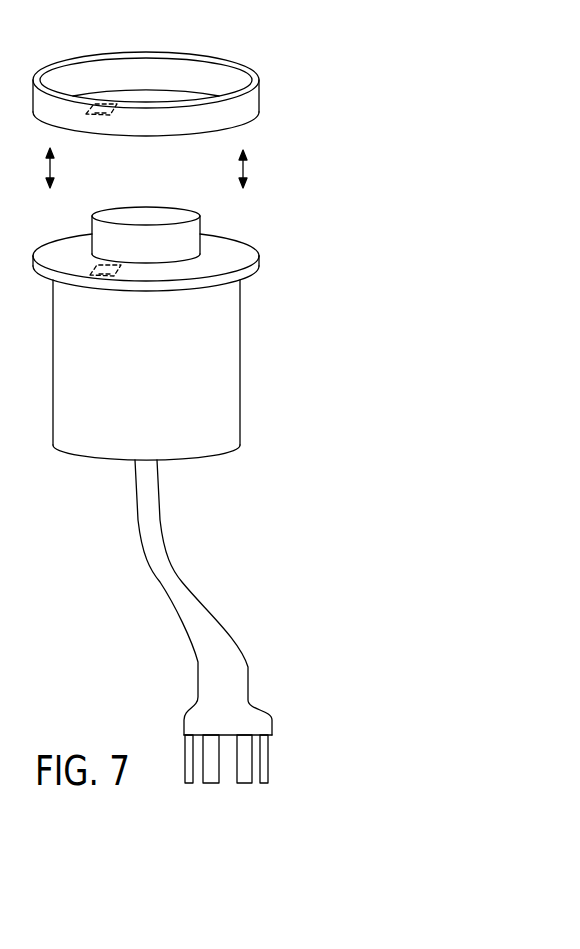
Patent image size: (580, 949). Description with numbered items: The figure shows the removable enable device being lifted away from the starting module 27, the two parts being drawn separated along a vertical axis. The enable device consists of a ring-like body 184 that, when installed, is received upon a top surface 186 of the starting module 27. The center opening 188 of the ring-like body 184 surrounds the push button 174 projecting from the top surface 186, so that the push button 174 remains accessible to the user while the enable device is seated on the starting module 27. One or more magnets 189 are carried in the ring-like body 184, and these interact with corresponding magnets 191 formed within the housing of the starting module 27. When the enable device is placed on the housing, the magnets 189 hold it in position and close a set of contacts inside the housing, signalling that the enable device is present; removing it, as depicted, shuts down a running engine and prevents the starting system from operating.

The starting module 27 is at (258, 368).
The push button 174 is at (158, 219).
The ring-like body 184 is at (246, 104).
The top surface 186 is at (233, 256).
The center opening 188 is at (172, 77).
The magnets 189 is at (97, 116).
The corresponding magnets 191 is at (94, 278).